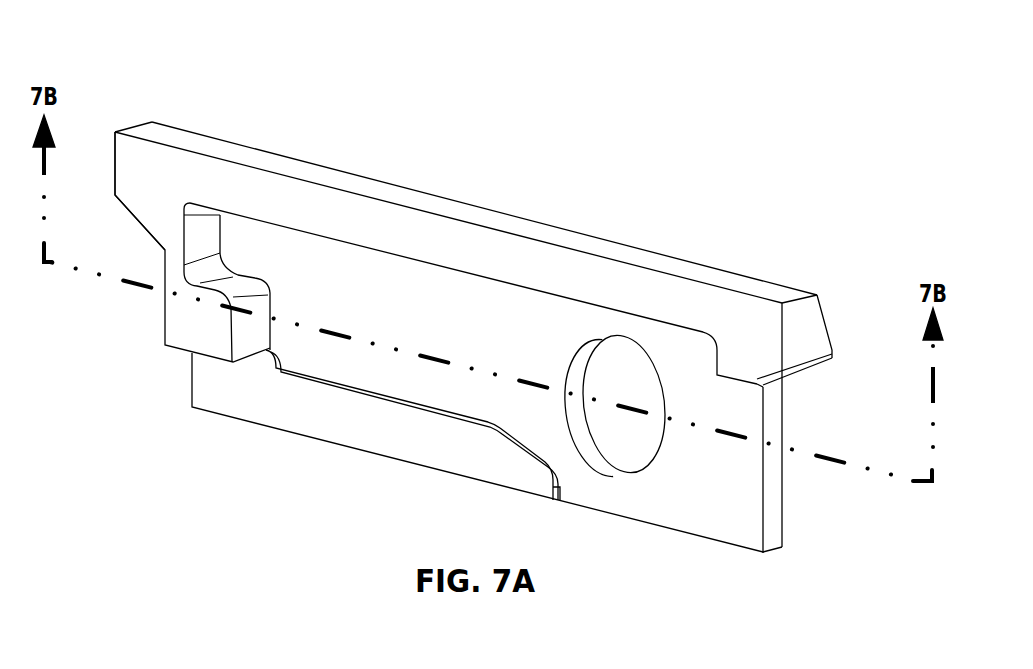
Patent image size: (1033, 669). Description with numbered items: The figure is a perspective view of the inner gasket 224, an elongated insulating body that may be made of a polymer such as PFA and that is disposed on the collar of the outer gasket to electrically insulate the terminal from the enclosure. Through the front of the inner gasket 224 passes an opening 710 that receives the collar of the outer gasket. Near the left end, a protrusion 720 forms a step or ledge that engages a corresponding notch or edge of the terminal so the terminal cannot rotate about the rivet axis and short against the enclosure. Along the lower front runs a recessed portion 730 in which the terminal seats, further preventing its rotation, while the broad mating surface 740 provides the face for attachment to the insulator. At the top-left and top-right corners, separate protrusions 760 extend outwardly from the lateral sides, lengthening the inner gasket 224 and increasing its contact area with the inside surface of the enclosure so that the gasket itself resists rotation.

The inner gasket 224 is at (82, 27).
The opening 710 is at (657, 458).
The protrusion 720 is at (230, 283).
The recessed portion 730 is at (332, 355).
The mating surface 740 is at (692, 308).
The protrusion 760 is at (113, 170).